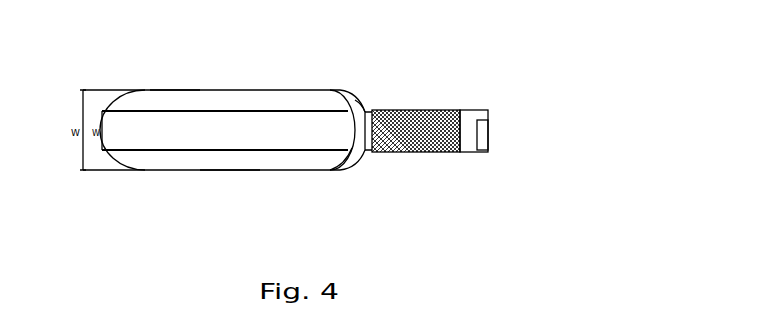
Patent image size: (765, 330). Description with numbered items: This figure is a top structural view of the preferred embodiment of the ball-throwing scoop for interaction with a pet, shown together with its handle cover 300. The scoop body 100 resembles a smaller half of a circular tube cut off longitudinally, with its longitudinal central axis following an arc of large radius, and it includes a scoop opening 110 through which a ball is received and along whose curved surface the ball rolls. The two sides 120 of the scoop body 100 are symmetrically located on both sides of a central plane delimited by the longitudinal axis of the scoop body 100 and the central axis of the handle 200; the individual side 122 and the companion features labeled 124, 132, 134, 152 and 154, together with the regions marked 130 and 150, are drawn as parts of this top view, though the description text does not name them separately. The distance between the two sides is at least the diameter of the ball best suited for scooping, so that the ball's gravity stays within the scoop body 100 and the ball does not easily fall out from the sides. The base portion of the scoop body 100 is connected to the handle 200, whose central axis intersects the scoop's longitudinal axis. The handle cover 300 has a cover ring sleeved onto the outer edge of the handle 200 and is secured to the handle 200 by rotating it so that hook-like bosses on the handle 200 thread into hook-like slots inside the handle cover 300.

The scoop body 100 is at (280, 172).
The scoop opening 110 is at (105, 121).
The sides 120 is at (199, 225).
The side 122 is at (228, 171).
The upper body portion 124 is at (177, 90).
The vibration module 130 is at (259, 46).
The lower module portion 132 is at (207, 150).
The upper module portion 134 is at (253, 110).
The outer cover 150 is at (339, 44).
The cover body 152 is at (357, 146).
The cover neck 154 is at (363, 114).
The handle 200 is at (437, 155).
The handle cover 300 is at (484, 138).